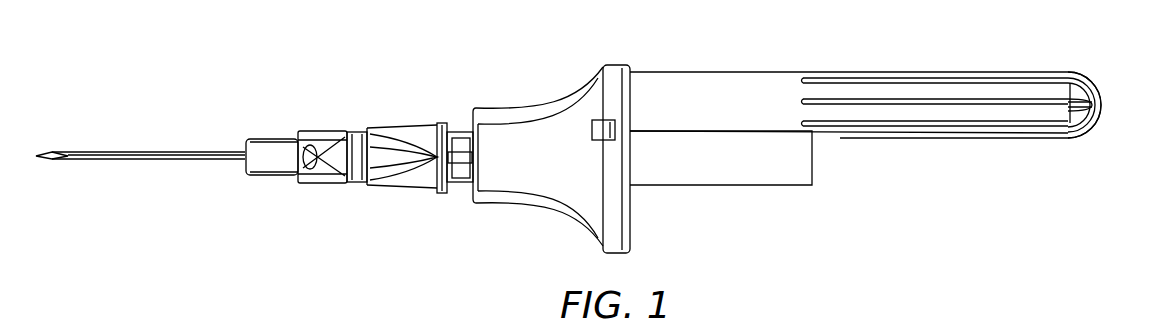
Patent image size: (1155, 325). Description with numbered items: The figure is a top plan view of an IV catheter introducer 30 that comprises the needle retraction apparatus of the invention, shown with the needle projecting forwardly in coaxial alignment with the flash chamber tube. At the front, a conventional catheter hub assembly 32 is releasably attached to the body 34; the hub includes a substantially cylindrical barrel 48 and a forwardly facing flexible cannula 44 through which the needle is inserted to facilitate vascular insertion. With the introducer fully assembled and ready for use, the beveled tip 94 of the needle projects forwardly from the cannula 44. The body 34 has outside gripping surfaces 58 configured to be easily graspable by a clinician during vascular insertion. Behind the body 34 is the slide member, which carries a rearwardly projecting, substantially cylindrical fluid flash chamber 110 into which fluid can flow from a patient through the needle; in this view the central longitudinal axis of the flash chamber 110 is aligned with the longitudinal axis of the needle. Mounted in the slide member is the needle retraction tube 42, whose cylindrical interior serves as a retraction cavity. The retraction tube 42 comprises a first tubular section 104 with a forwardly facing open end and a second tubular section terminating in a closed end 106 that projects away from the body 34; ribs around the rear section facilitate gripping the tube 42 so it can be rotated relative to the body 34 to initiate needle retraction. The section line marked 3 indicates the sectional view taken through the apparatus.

The section line 3- 3 is at (20, 157).
The IV catheter introducer 30 is at (506, 74).
The catheter hub assembly 32 is at (305, 112).
The body 34 is at (557, 89).
The needle retraction tube 42 is at (944, 63).
The cannula 44 is at (156, 162).
The barrel 48 is at (417, 178).
The gripping surfaces 58 is at (543, 184).
The beveled tip 94 is at (36, 150).
The first tubular section 104 is at (732, 82).
The closed end 106 is at (1104, 104).
The fluid flash chamber 110 is at (722, 174).